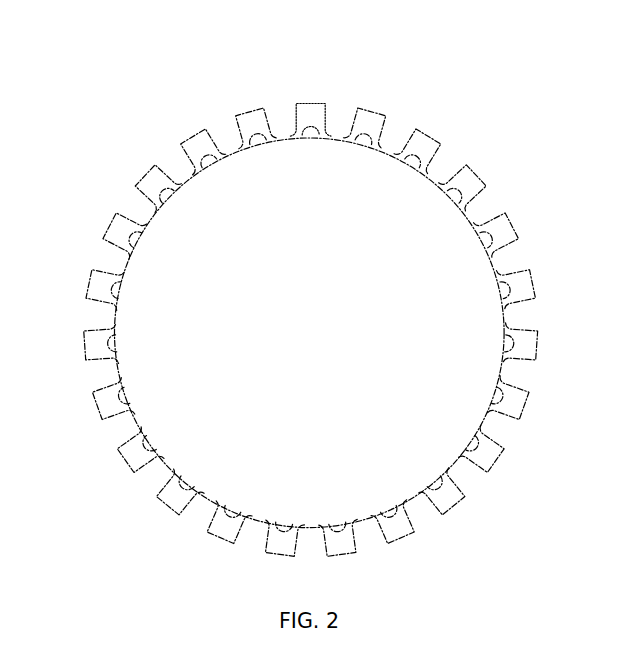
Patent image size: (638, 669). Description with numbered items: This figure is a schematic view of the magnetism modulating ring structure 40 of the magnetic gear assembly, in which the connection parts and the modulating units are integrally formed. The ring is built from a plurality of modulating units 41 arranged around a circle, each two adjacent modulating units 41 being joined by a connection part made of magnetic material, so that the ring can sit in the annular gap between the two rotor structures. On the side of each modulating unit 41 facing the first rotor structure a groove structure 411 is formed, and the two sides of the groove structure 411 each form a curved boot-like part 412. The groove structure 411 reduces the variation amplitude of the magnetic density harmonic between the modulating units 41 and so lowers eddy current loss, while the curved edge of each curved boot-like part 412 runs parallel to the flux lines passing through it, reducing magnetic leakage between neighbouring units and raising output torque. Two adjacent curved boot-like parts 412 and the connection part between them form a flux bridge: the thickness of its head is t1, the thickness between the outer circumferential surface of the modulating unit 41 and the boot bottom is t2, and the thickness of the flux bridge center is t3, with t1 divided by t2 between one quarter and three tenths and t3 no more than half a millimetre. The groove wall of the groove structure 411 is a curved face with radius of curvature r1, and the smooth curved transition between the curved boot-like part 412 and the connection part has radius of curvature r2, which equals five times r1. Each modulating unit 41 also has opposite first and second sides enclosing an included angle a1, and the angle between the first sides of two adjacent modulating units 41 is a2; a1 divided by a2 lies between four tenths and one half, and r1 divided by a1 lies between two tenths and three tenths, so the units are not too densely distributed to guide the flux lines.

The toothed ring gear 40 is at (104, 140).
The modulating unit 41 is at (527, 348).
The groove structure 411 is at (118, 292).
The curved boot-like part 412 is at (123, 282).
The radius of curvature of the first curved face r1 is at (207, 162).
The radius of curvature of the curved transitional surface r2 is at (225, 132).
The included angle between the first side and the second side of each modulating uni a1 is at (345, 83).
The included angle between the first sides of two adjacent modulating units a2 is at (358, 108).
The thickness of the flux bridge head t1 is at (383, 170).
The thickness between the outer circumferential surface of the modulating unit and t t2 is at (466, 166).
The thickness of the flux bridge center t3 is at (427, 160).